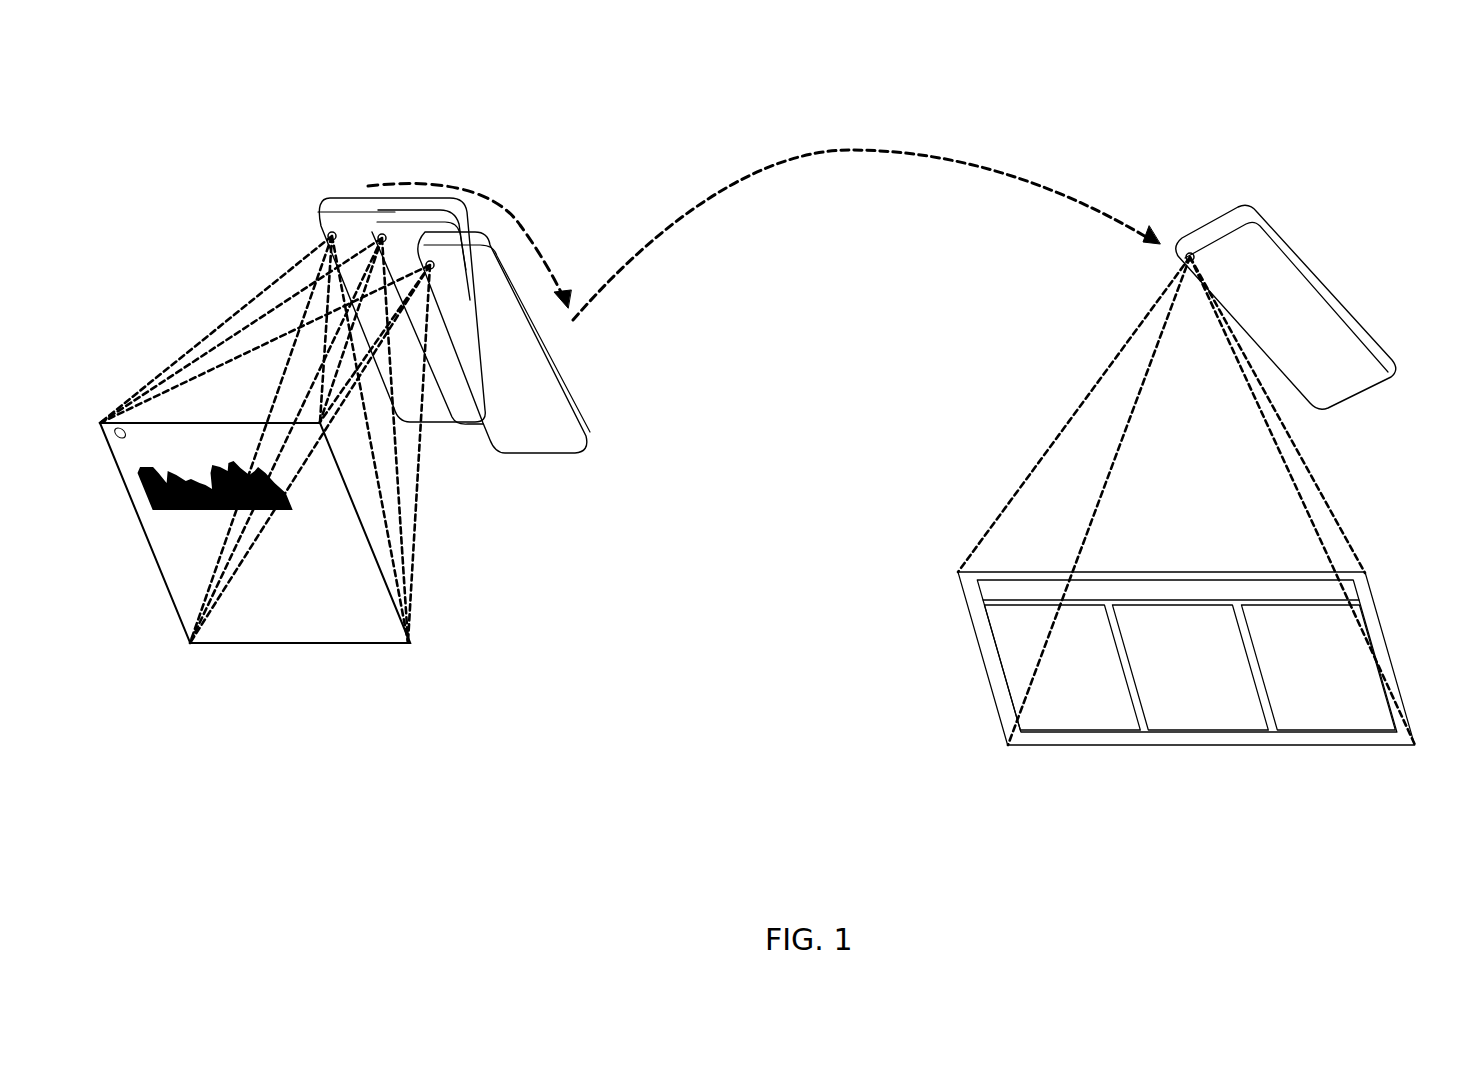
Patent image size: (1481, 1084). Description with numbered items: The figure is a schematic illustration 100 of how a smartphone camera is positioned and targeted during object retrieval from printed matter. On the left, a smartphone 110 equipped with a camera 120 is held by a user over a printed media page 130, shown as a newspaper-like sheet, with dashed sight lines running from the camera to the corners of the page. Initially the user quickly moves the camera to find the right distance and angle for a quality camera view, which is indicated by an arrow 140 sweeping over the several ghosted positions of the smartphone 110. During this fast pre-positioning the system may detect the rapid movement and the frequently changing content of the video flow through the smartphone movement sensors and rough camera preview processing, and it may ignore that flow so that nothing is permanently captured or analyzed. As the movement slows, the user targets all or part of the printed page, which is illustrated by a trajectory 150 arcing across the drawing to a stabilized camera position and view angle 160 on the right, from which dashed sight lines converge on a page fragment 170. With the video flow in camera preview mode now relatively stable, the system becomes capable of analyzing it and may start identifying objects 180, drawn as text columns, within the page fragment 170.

The schematic illustration 100 is at (1433, 142).
The smartphone 110 is at (345, 196).
The camera 120 is at (316, 231).
The printed media page 130 is at (367, 537).
The arrow 140 is at (470, 187).
The trajectory 150 is at (887, 149).
The camera position and view angle 160 is at (1207, 203).
The page fragment 170 is at (1008, 572).
The objects 180 is at (1000, 657).